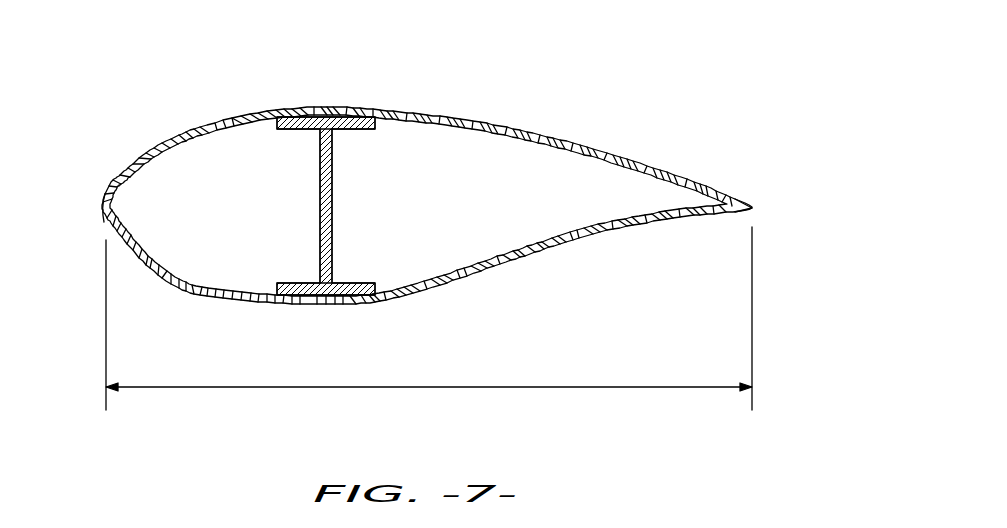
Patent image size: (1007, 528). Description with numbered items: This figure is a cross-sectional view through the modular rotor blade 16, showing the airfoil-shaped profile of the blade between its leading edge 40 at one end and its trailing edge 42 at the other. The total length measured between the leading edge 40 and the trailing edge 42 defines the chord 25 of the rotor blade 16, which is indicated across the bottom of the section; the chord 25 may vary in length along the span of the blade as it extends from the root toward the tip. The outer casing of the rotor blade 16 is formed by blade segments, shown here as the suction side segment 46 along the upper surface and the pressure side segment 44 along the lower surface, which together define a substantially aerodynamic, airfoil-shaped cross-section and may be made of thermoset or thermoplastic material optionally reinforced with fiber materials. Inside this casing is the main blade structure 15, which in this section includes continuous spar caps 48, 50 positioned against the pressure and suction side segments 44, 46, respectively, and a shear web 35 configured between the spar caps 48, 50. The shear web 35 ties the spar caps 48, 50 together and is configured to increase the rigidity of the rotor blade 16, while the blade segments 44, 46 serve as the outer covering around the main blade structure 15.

The rotor blade 16 is at (613, 101).
The main blade structure 15 is at (320, 254).
The chord 25 is at (560, 388).
The shear web 35 is at (318, 208).
The leading edge 40 is at (102, 207).
The trailing edge 42 is at (749, 207).
The pressure side segment 44 is at (523, 258).
The suction side segment 46 is at (460, 113).
The spar cap 48 is at (348, 283).
The spar cap 50 is at (343, 130).